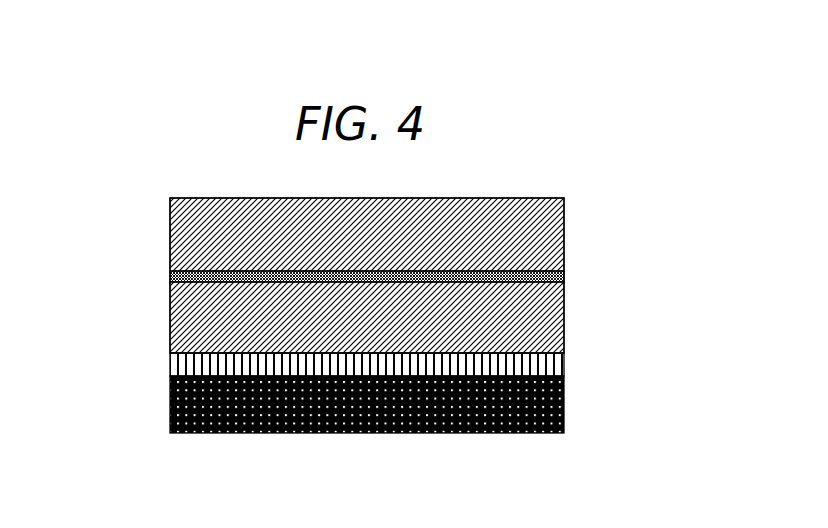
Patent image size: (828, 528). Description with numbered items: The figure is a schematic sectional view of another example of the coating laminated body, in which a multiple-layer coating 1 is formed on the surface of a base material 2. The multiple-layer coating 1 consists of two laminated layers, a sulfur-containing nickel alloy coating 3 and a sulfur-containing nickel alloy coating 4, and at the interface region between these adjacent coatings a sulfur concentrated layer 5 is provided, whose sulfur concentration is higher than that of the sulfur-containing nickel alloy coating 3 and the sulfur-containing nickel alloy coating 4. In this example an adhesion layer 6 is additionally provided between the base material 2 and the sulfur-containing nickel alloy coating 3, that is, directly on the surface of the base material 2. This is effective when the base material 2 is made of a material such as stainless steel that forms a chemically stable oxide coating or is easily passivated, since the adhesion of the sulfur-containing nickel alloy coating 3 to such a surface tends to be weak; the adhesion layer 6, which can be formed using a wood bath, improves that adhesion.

The multiple-layer coating 1 is at (143, 199).
The base material 2 is at (170, 405).
The sulfur-containing nickel alloy coating 3 is at (558, 323).
The sulfur-containing nickel alloy coating 4 is at (558, 240).
The sulfur concentrated layer 5 is at (558, 277).
The adhesion layer 6 is at (558, 367).